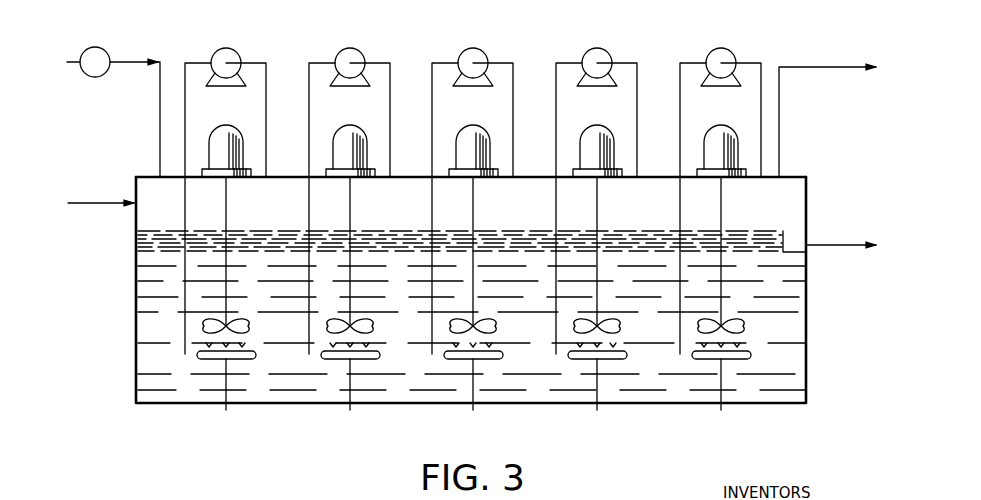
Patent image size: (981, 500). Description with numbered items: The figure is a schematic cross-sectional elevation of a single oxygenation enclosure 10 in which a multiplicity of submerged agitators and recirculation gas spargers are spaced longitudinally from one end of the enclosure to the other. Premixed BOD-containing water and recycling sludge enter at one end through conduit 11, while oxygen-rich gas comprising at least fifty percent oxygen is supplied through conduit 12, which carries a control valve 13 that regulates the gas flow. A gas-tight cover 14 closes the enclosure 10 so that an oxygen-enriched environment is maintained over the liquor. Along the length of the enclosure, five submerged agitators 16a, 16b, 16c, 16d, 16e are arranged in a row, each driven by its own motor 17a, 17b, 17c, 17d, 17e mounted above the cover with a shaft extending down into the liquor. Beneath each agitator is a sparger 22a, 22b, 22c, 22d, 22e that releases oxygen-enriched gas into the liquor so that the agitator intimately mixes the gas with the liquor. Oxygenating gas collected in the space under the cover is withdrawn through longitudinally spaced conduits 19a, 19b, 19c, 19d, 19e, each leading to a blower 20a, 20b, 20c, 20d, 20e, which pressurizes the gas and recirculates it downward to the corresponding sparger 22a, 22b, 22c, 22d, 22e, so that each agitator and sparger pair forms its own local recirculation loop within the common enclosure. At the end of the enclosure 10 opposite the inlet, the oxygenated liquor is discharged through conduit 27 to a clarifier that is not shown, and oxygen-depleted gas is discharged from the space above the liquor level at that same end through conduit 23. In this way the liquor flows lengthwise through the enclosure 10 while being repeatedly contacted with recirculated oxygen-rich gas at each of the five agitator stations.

The oxygenation enclosure 10 is at (135, 331).
The conduit 11 is at (77, 200).
The conduit 12 is at (70, 61).
The control valve 13 is at (100, 47).
The gas-tight cover 14 is at (279, 174).
The submerged agitator 16a is at (242, 323).
The submerged agitator 16b is at (366, 323).
The submerged agitator 16c is at (489, 323).
The submerged agitator 16d is at (613, 323).
The submerged agitator 16e is at (737, 323).
The motor 17a is at (219, 142).
The motor 17b is at (343, 142).
The motor 17c is at (464, 142).
The motor 17d is at (588, 142).
The motor 17e is at (712, 140).
The conduit 19a is at (266, 62).
The conduit 19b is at (390, 62).
The conduit 19c is at (513, 63).
The conduit 19d is at (637, 63).
The conduit 19e is at (761, 63).
The blower 20a is at (221, 49).
The blower 20b is at (345, 49).
The blower 20c is at (472, 50).
The blower 20d is at (597, 50).
The blower 20e is at (721, 52).
The sparger 22a is at (226, 392).
The sparger 22b is at (350, 392).
The sparger 22c is at (473, 392).
The sparger 22d is at (597, 392).
The sparger 22e is at (721, 392).
The conduit 23 is at (807, 66).
The conduit 27 is at (829, 243).